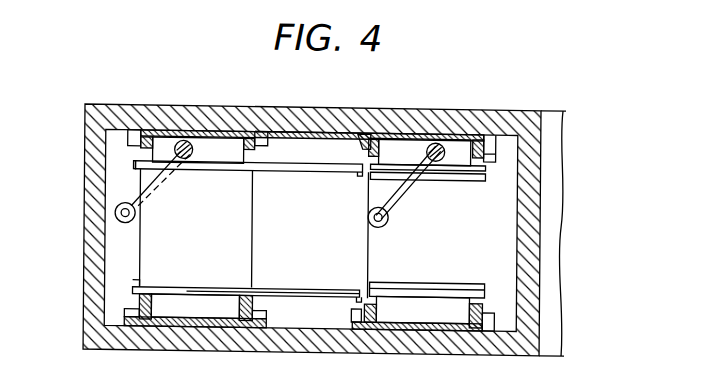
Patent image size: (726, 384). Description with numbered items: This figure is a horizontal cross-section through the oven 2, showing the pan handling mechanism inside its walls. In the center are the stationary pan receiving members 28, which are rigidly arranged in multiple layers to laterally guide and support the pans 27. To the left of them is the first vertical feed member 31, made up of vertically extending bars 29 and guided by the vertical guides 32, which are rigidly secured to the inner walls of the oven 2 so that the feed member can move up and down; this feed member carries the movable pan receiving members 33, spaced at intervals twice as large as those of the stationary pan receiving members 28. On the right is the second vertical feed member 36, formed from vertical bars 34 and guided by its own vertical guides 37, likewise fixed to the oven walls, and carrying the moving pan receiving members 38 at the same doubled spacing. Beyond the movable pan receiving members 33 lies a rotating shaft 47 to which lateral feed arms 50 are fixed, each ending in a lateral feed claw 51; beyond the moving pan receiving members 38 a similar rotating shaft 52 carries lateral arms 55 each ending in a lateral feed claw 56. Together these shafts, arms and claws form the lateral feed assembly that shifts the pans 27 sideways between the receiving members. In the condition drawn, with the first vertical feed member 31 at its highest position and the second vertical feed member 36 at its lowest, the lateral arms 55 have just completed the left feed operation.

The oven 2 is at (380, 104).
The pan 27 is at (352, 264).
The stationary pan receiving member 28 is at (300, 160).
The vertically extending bar 29 is at (242, 129).
The first vertical feed member 31 is at (137, 151).
The vertical guide 32 is at (149, 135).
The movable pan receiving member 33 is at (185, 296).
The vertical bar 34 is at (478, 134).
The second vertical feed member 36 is at (494, 155).
The vertical guide 37 is at (433, 134).
The moving pan receiving member 38 is at (473, 277).
The rotating shaft 47 is at (188, 136).
The lateral feed arm 50 is at (116, 205).
The lateral feed claw 51 is at (116, 219).
The rotating shaft 52 is at (440, 174).
The lateral arm 55 is at (410, 180).
The lateral feed claw 56 is at (390, 218).